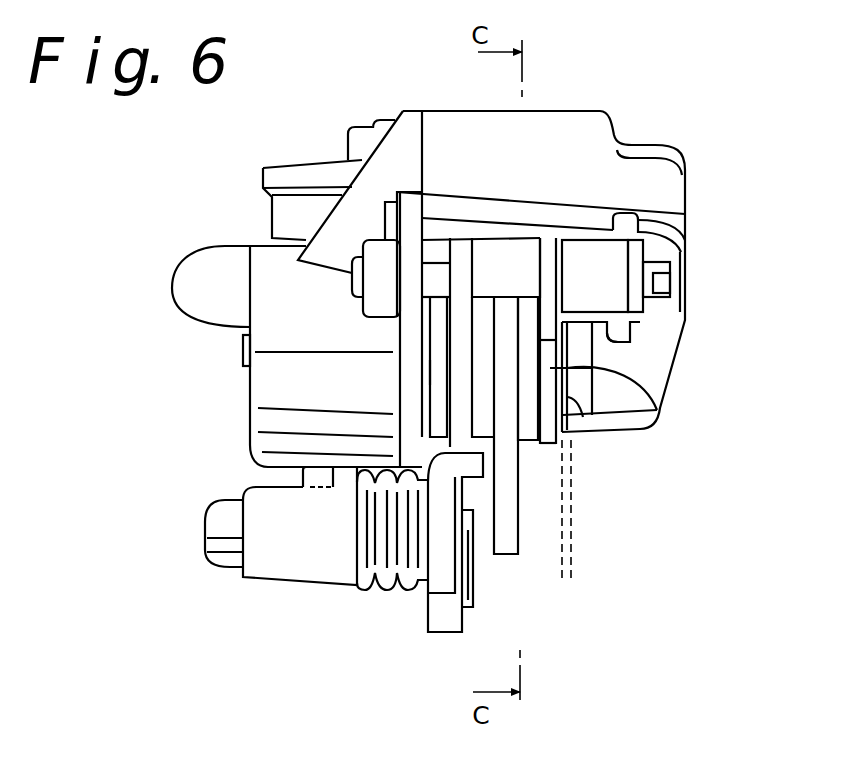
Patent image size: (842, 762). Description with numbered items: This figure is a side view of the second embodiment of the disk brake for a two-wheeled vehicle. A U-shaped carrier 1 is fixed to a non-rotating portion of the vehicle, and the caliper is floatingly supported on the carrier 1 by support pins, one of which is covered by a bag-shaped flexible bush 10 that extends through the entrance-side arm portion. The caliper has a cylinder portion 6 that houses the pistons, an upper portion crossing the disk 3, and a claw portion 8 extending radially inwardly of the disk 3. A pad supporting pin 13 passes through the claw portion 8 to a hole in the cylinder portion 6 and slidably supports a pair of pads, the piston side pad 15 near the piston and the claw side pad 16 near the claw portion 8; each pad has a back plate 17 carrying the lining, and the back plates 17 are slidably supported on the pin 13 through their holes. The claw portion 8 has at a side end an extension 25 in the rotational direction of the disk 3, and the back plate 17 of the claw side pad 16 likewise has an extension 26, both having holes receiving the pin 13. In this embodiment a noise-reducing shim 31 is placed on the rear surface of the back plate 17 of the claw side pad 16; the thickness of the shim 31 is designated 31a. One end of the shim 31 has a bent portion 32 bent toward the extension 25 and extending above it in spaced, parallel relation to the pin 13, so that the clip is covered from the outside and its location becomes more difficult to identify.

The carrier 1 is at (443, 617).
The disk 3 is at (507, 537).
The cylinder portion 6 is at (280, 373).
The claw portion 8 is at (645, 350).
The bush 10 is at (220, 525).
The pad supporting pin 13 is at (515, 277).
The piston side pad 15 is at (447, 373).
The claw side pad 16 is at (540, 455).
The back plate 17 is at (455, 333).
The extension 25 is at (630, 342).
The extension 26 is at (552, 247).
The shim 31 is at (583, 417).
The thickness of the shim 31a is at (538, 565).
The bent portion 32 is at (612, 262).